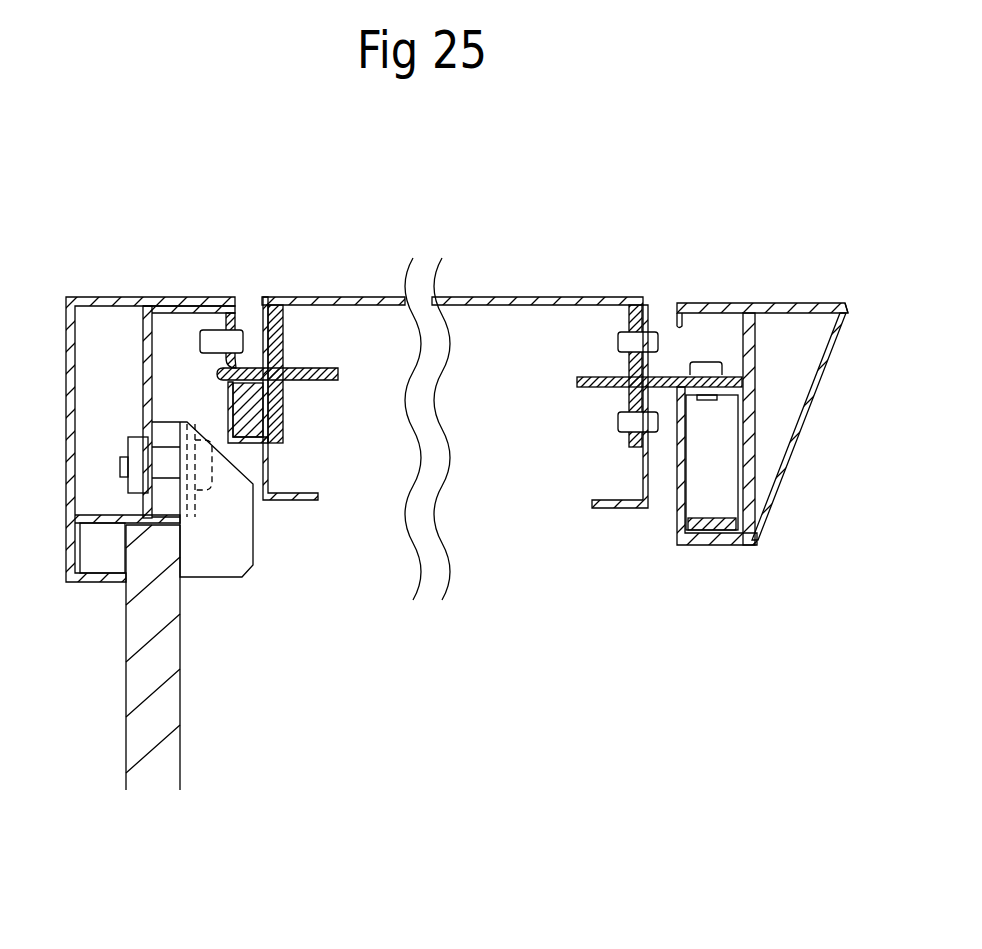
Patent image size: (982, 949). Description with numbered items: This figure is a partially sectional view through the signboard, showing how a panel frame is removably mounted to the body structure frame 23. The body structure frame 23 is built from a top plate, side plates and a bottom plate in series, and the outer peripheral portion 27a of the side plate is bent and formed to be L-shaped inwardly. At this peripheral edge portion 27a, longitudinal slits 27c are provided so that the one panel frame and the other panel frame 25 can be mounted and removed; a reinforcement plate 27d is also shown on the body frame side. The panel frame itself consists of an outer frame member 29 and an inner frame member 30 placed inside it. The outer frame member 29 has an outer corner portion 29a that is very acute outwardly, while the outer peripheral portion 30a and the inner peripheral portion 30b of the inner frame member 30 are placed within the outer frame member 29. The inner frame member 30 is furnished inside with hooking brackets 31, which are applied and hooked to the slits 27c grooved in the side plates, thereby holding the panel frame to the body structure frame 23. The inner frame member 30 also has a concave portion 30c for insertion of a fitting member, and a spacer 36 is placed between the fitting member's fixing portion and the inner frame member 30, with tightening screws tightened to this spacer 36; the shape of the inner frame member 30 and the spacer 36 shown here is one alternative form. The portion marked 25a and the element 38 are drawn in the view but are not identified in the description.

The body structure frame 23 is at (366, 287).
The other panel frame 25 is at (81, 284).
The bracket of frame channel 25a is at (200, 298).
The outer peripheral portion 27a is at (264, 466).
The longitudinal slit 27c is at (283, 363).
The reinforcement plate 27d is at (618, 413).
The outer frame member 29 is at (793, 300).
The outer corner portion 29a is at (846, 316).
The inner frame member 30 is at (757, 445).
The outer peripheral portion 30a is at (712, 338).
The inner peripheral portion 30b is at (720, 545).
The concave portion 30c is at (672, 320).
The hooking bracket 31 is at (308, 378).
The spacer 36 is at (677, 495).
The support wall 38 is at (142, 347).